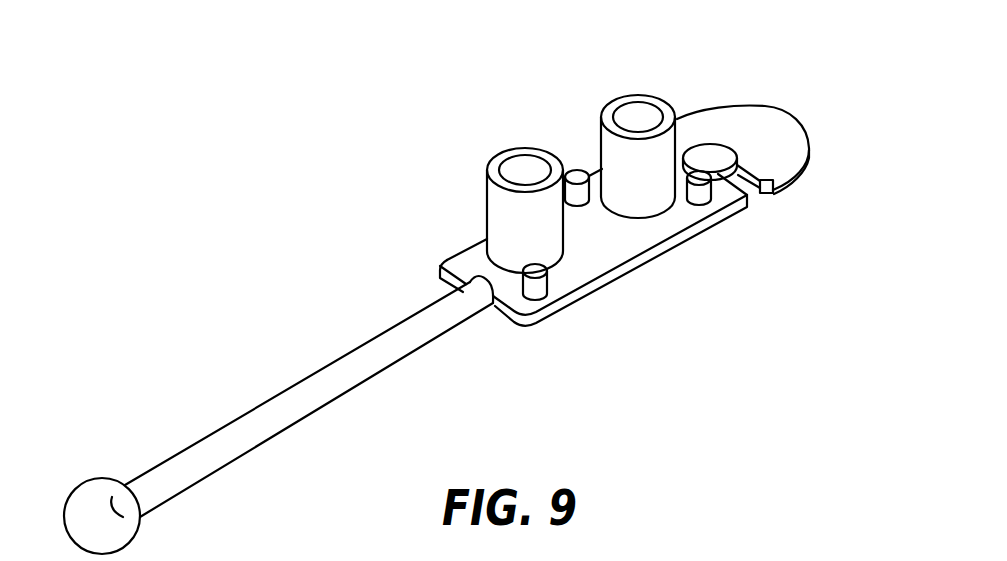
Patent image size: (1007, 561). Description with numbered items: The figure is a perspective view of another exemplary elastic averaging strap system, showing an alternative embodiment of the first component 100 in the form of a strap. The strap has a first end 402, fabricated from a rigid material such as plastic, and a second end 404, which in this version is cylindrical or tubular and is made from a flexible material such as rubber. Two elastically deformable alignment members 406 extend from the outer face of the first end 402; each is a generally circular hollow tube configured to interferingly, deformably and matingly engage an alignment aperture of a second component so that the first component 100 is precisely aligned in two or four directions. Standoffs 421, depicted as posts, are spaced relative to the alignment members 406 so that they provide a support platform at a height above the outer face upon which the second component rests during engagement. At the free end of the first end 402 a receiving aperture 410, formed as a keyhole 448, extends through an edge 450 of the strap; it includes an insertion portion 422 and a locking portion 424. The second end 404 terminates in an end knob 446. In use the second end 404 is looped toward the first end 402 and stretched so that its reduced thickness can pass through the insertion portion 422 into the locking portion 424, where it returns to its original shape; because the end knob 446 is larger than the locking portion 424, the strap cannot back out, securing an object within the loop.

The first component 100 is at (333, 238).
The first end 402 is at (705, 117).
The second end 404 is at (252, 395).
The elastically deformable alignment member 406 is at (485, 210).
The receiving aperture 410 is at (733, 140).
The keyhole 448 is at (743, 150).
The standoffs 421 is at (548, 284).
The insertion portion 422 is at (757, 199).
The locking portion 424 is at (740, 155).
The end knob 446 is at (97, 497).
The edge 450 is at (665, 258).